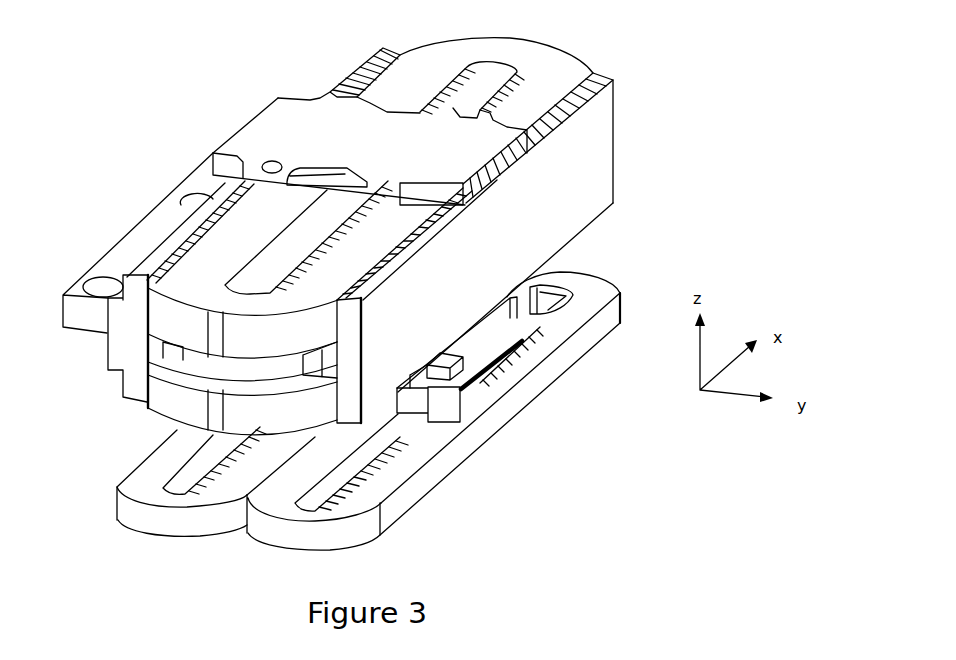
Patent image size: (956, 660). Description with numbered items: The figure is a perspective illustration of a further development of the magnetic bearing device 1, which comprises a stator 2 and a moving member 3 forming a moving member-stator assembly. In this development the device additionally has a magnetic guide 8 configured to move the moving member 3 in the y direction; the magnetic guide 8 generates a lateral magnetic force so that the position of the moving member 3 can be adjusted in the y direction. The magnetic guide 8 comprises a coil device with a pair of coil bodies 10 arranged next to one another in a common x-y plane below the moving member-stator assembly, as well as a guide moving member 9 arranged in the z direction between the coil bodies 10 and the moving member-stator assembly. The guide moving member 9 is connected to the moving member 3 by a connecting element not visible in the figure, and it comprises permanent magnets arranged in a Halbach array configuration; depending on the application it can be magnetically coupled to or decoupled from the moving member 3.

The magnetic bearing device 1 is at (220, 78).
The stator 2 is at (645, 139).
The moving member 3 is at (523, 163).
The magnetic guide 8 is at (633, 432).
The guide moving member 9 is at (494, 348).
The coil bodies 10 is at (257, 463).